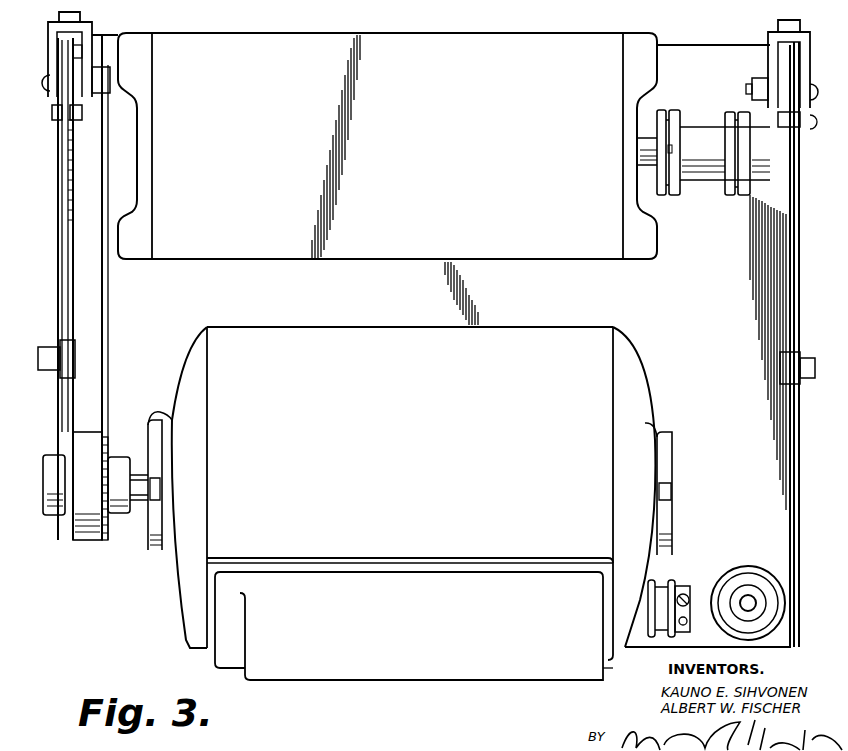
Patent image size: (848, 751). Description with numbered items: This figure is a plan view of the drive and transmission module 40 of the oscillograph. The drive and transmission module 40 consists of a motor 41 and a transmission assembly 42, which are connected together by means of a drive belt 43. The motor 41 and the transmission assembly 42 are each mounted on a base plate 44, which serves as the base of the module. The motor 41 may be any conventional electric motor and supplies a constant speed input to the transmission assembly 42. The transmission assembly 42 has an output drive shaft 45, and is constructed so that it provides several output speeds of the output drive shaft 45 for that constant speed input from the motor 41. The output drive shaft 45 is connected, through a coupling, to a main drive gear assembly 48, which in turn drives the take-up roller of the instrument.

The drive and transmission module 40 is at (672, 36).
The motor 41 is at (564, 391).
The transmission assembly 42 is at (232, 25).
The drive belt 43 is at (92, 303).
The base plate 44 is at (755, 405).
The output drive shaft 45 is at (645, 140).
The main drive gear assembly 48 is at (685, 108).